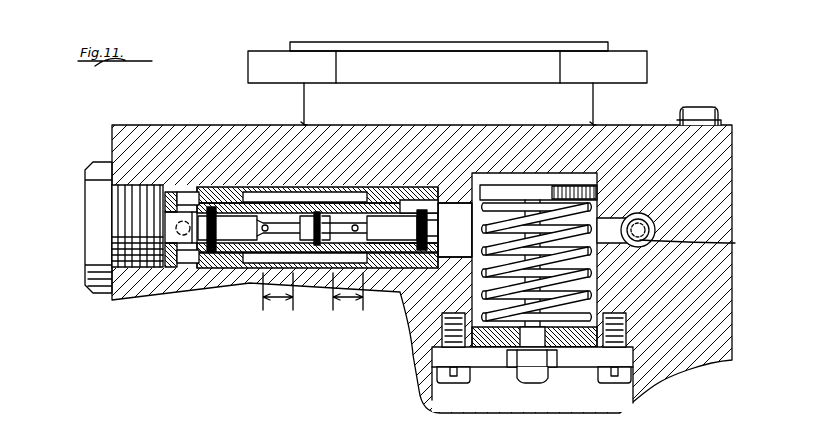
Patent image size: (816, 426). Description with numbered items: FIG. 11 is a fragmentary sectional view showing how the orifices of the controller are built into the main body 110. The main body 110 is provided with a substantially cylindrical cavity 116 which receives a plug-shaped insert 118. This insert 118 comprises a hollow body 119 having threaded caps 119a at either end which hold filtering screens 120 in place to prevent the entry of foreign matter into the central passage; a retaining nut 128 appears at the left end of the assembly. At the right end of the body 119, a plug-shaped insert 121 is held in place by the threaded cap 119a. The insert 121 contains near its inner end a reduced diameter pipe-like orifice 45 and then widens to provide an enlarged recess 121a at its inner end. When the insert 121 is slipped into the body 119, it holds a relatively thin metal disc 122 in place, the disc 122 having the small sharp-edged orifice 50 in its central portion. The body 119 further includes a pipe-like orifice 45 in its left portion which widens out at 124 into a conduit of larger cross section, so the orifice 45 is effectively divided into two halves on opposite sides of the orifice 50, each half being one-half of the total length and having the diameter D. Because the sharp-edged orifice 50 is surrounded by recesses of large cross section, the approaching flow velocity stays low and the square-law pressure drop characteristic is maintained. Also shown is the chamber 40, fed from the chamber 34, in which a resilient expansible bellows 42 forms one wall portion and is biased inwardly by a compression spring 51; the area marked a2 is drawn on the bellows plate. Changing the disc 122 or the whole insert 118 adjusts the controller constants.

The main body 110 is at (200, 125).
The plug-shaped insert 118 is at (246, 196).
The orifice diameter D is at (283, 197).
The threaded plug nut 128 is at (88, 284).
The threaded cap 119a is at (190, 198).
The widened conduit portion 124 is at (238, 245).
The filtering screen 120 is at (194, 240).
The hollow body 119 is at (310, 212).
The metal disc 122 is at (318, 212).
The pipe-like orifice 45 is at (266, 224).
The sharp-edged orifice 50 is at (322, 216).
The enlarged recess 121a is at (322, 250).
The plug-shaped insert 121 is at (360, 258).
The cylindrical cavity 116 is at (382, 268).
The chamber 40 is at (510, 186).
The piston area a2 is at (548, 198).
The spring 51 is at (592, 257).
The bellows 42 is at (600, 210).
The chamber 34 is at (721, 246).